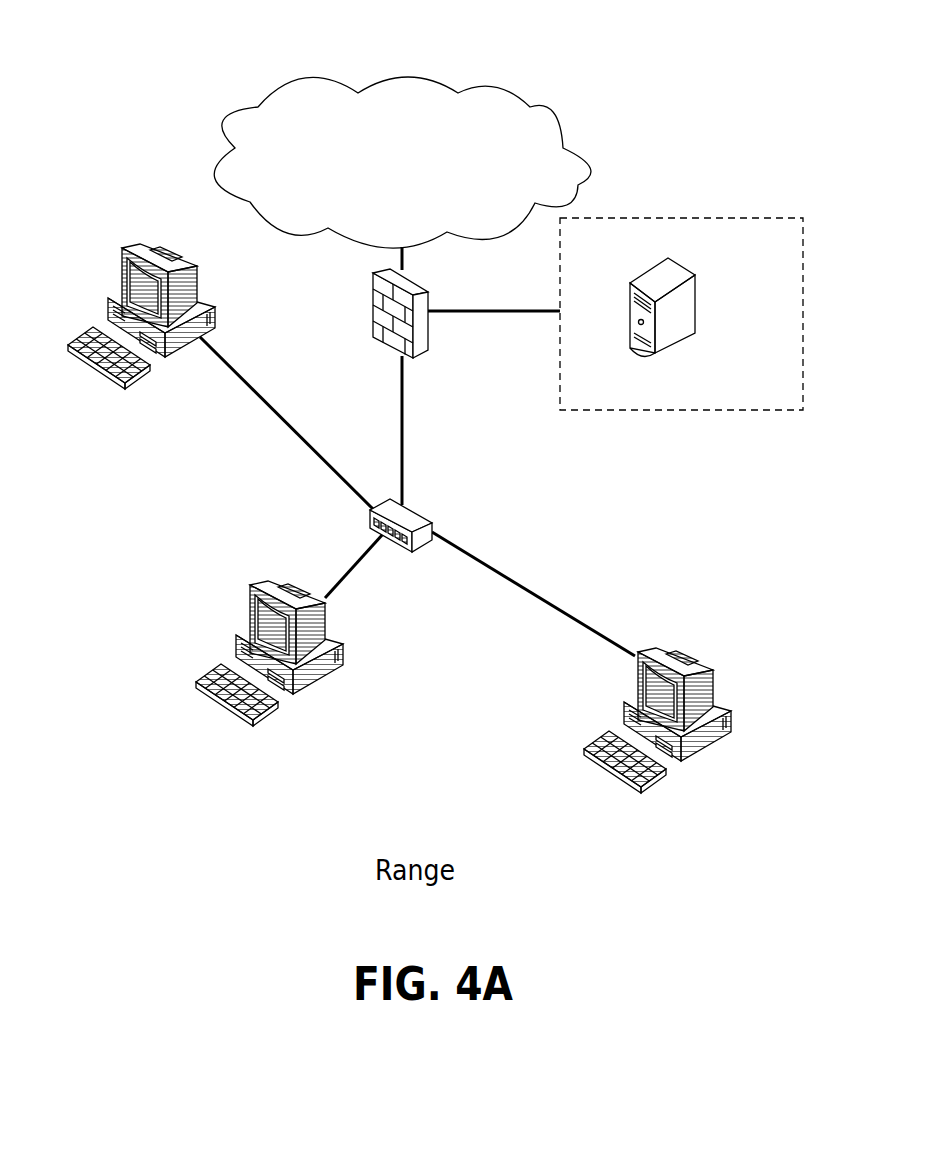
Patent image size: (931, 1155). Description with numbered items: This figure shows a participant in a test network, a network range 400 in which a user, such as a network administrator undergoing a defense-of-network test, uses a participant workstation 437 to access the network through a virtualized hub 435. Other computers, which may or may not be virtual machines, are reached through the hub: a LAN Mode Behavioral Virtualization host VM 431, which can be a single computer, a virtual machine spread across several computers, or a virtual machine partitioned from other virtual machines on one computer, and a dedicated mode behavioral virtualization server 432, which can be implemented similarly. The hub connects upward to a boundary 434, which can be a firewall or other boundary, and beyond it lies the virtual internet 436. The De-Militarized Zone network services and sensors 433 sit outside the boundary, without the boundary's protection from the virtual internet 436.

The range network system 400 is at (146, 88).
The LAN Mode Behavioral Virtualization host VM 431 is at (252, 583).
The dedicated mode behavioral virtualization server 432 is at (700, 658).
The DMZ network services and sensors 433 is at (698, 305).
The boundary 434 is at (383, 347).
The virtualized hub 435 is at (400, 550).
The virtual internet 436 is at (413, 206).
The participant workstation 437 is at (128, 245).